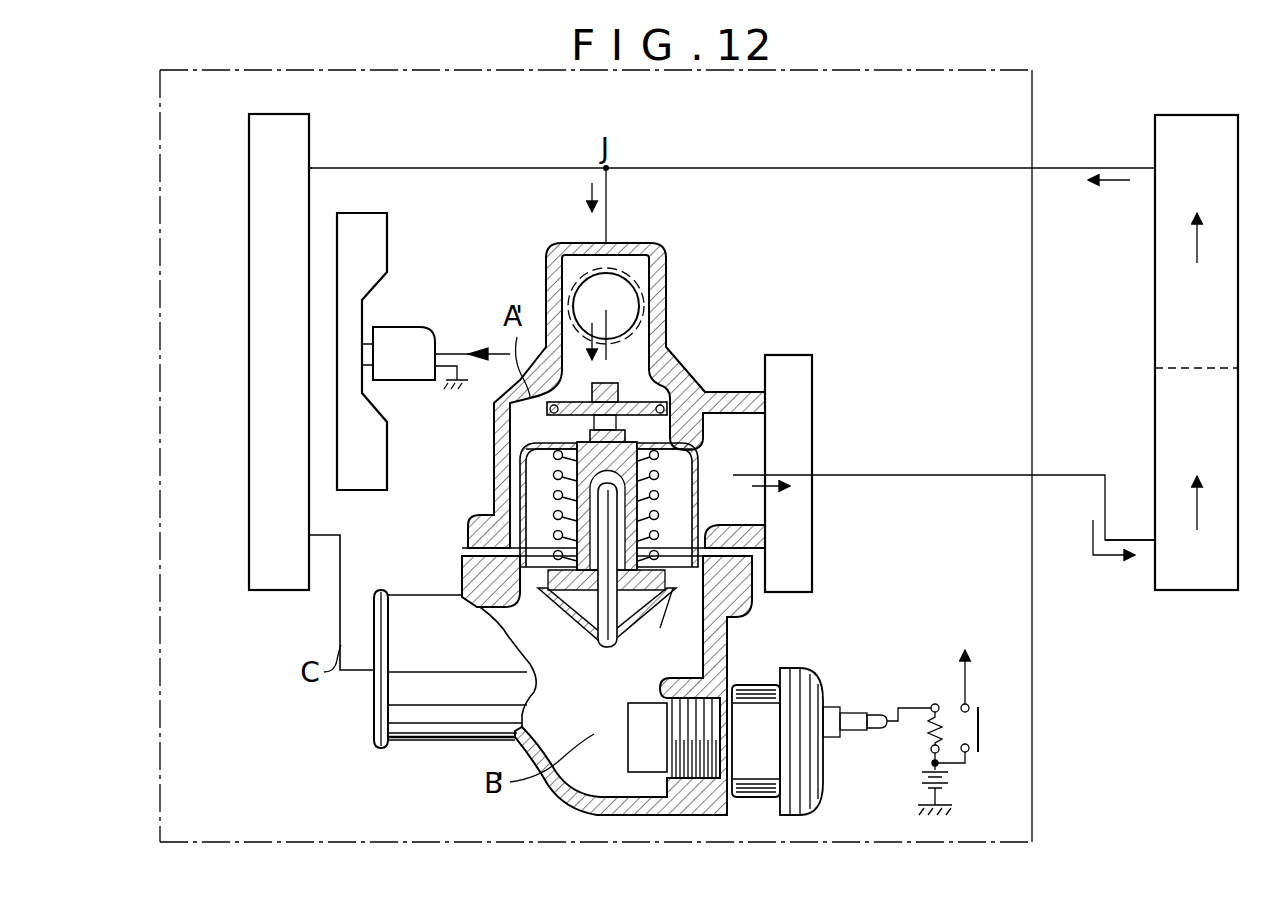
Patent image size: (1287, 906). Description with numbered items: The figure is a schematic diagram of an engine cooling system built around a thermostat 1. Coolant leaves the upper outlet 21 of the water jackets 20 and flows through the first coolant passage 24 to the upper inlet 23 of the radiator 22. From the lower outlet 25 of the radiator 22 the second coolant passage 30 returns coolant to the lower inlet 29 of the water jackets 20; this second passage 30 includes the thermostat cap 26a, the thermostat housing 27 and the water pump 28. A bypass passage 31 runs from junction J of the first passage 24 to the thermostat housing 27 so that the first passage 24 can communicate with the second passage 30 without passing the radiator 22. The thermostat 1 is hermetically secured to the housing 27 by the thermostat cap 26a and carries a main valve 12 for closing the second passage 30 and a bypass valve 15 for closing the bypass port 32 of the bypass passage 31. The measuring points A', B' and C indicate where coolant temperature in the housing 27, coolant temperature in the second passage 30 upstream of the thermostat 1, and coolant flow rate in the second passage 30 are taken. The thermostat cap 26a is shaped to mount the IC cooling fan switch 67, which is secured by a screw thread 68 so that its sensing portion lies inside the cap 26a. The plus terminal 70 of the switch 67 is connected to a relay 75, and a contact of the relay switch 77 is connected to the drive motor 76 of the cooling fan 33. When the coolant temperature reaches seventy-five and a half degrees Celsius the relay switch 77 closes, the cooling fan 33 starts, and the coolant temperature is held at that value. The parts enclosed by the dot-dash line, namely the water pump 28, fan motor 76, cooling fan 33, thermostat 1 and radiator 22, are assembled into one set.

The thermostat 1 is at (660, 624).
The main valve 12 is at (545, 530).
The bypass valve 15 is at (703, 372).
The water jackets 20 is at (1155, 296).
The upper outlet 21 is at (1150, 167).
The radiator 22 is at (248, 284).
The upper inlet 23 is at (311, 168).
The first coolant passage 24 is at (512, 168).
The lower outlet 25 is at (313, 538).
The thermostat cap 26a is at (560, 790).
The thermostat housing 27 is at (505, 435).
The water pump 28 is at (790, 355).
The lower inlet 29 is at (1150, 544).
The second coolant passage 30 is at (754, 475).
The bypass passage 31 is at (608, 210).
The bypass port 32 is at (672, 346).
The cooling fan 33 is at (389, 248).
The IC cooling fan switch 67 is at (822, 680).
The screw thread 68 is at (682, 725).
The plus terminal 70 is at (878, 714).
The relay 75 is at (930, 738).
The drive motor 76 is at (417, 335).
The relay switch 77 is at (984, 728).